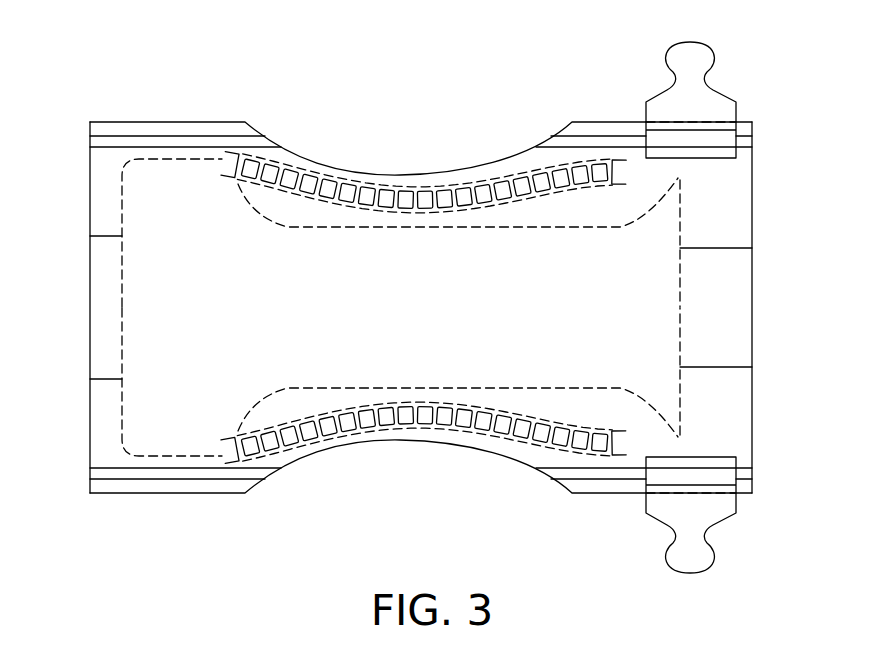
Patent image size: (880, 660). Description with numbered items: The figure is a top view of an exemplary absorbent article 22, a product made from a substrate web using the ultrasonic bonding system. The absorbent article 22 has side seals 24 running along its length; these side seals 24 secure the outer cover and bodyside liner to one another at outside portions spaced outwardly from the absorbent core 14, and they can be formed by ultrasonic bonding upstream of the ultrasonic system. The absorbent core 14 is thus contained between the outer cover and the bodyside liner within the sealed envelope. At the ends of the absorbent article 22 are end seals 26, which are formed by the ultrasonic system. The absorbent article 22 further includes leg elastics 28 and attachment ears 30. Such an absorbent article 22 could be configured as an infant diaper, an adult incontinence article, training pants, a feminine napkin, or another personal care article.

The absorbent article 22 is at (202, 44).
The side seals 24 is at (187, 136).
The end seals 26 is at (89, 325).
The leg elastics 28 is at (370, 183).
The attachment ears 30 is at (716, 66).
The absorbent core 14 is at (686, 193).